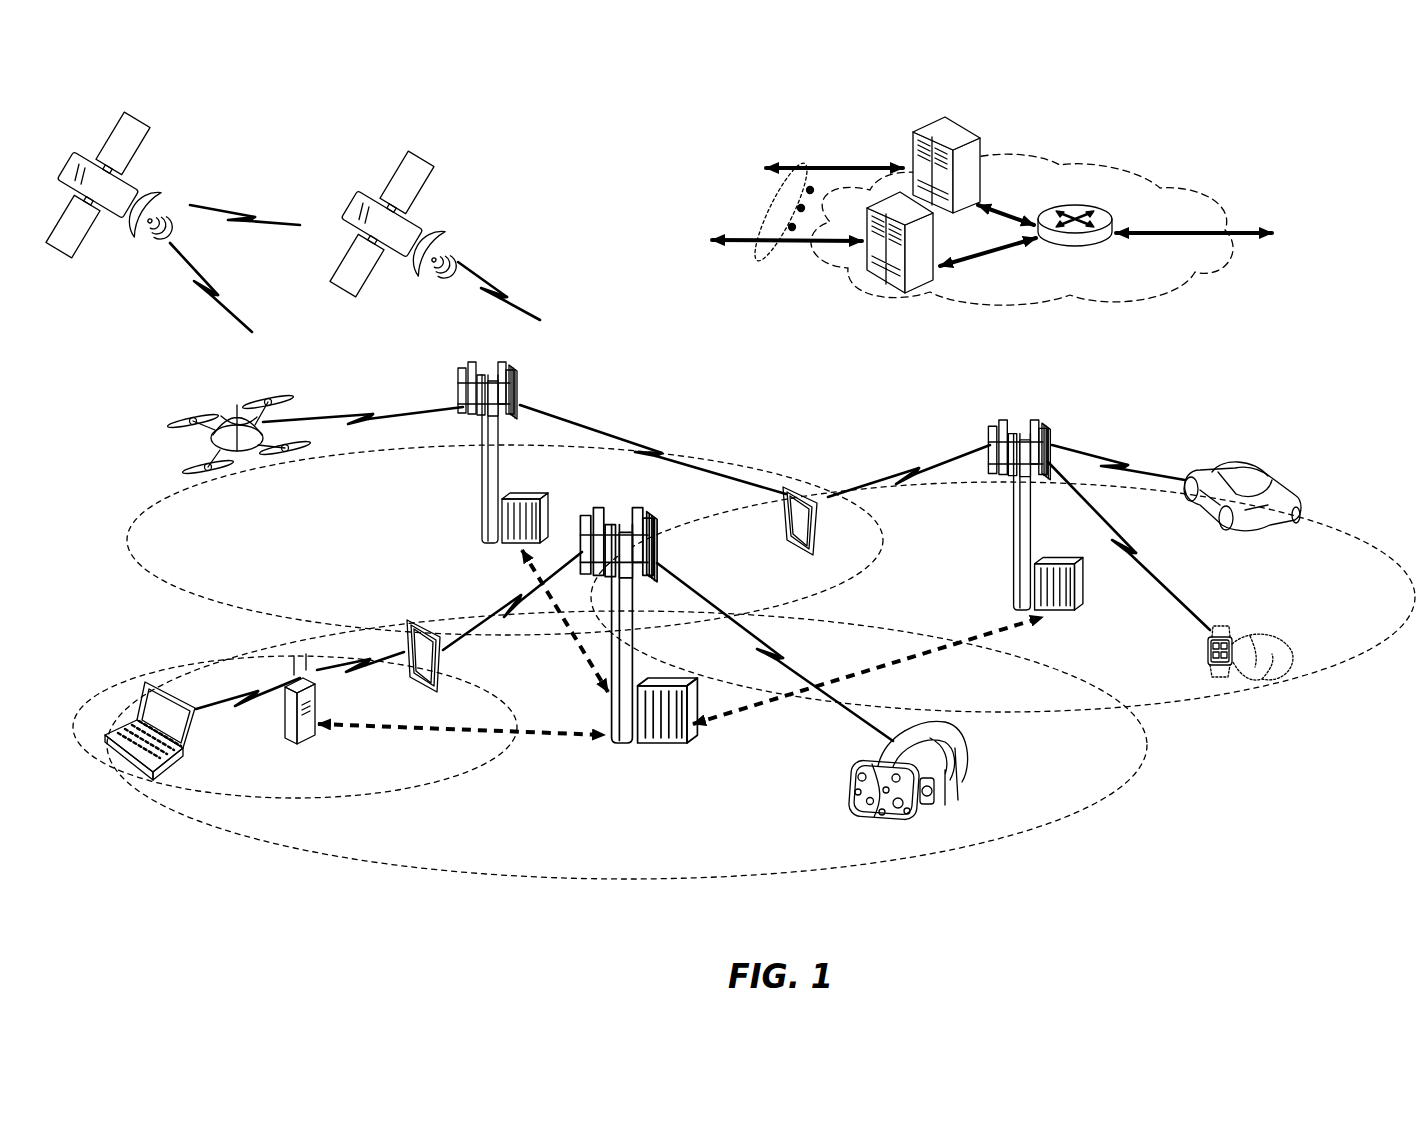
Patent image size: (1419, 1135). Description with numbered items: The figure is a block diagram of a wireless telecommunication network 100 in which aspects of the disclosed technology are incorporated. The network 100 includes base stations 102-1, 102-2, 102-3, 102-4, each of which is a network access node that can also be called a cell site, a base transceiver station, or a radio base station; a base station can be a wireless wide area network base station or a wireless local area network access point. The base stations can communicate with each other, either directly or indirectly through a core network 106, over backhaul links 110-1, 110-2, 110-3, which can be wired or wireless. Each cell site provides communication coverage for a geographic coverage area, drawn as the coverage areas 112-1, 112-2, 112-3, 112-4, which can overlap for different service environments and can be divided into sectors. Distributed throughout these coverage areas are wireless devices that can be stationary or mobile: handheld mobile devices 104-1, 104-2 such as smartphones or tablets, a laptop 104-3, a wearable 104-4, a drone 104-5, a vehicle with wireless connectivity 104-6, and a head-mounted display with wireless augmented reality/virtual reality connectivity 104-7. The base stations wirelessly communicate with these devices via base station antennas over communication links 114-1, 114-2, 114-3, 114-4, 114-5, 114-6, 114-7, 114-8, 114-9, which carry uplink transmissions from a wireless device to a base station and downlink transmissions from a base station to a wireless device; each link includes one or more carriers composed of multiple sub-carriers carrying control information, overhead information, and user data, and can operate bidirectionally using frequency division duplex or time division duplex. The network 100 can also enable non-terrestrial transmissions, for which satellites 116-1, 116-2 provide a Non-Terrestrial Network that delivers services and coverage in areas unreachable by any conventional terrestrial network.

The wireless telecommunication network 100 is at (1352, 150).
The base station 102-1 is at (616, 746).
The base station 102-2 is at (482, 500).
The base station 102-3 is at (1012, 540).
The base station 102-4 is at (282, 732).
The handheld mobile device 104-1 is at (440, 672).
The handheld mobile device 104-2 is at (785, 530).
The laptop 104-3 is at (128, 766).
The wearable 104-4 is at (1225, 630).
The drone 104-5 is at (245, 457).
The vehicle with wireless connectivity 104-6 is at (1262, 477).
The head-mounted display with wireless AR/VR connectivity 104-7 is at (955, 763).
The core network 106 is at (1112, 300).
The backhaul link 110-1 is at (360, 731).
The backhaul link 110-2 is at (935, 660).
The backhaul link 110-3 is at (578, 645).
The geographic coverage area 112-1 is at (548, 879).
The geographic coverage area 112-2 is at (425, 790).
The geographic coverage area 112-3 is at (192, 604).
The geographic coverage area 112-4 is at (1318, 522).
The communication link 114-1 is at (785, 650).
The communication link 114-2 is at (505, 597).
The communication link 114-3 is at (240, 702).
The communication link 114-4 is at (360, 668).
The communication link 114-5 is at (362, 412).
The communication link 114-6 is at (655, 450).
The communication link 114-7 is at (905, 465).
The communication link 114-8 is at (1140, 556).
The communication link 114-9 is at (1118, 460).
The satellite 116-1 is at (155, 196).
The satellite 116-2 is at (437, 242).